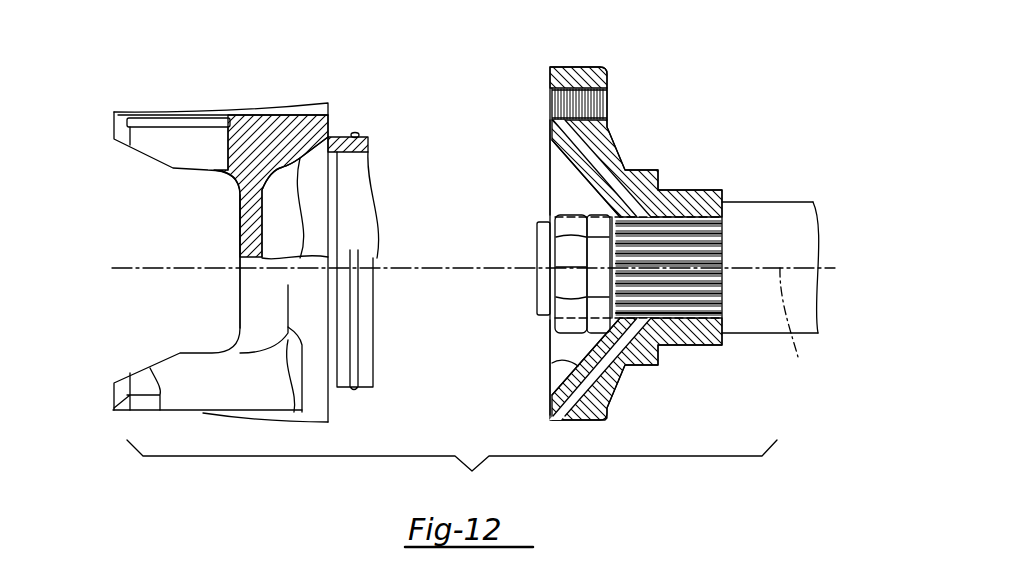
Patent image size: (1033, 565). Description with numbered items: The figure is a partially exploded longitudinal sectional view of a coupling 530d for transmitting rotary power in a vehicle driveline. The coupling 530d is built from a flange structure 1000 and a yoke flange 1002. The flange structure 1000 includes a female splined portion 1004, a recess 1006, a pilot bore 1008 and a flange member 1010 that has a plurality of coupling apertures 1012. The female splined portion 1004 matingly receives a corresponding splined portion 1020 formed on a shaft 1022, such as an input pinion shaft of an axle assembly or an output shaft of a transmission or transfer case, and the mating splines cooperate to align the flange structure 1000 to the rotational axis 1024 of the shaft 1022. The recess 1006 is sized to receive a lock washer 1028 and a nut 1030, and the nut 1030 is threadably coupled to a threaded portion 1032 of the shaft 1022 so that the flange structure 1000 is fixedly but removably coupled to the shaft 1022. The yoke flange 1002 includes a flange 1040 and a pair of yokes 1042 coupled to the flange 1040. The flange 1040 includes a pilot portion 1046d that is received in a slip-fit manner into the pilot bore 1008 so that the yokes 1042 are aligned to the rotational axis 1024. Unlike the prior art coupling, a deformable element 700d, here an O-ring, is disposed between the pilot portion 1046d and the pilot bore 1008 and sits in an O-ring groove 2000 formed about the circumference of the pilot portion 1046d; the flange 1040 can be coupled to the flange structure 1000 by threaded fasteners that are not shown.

The yoke flange 1002 is at (241, 249).
The yokes 1042 is at (114, 126).
The flange 1040 is at (240, 236).
The O-ring groove 2000 is at (368, 145).
The deformable element 700d is at (357, 133).
The pilot portion 1046d is at (355, 132).
The flange structure 1000 is at (619, 220).
The flange member 1010 is at (557, 72).
The coupling apertures 1012 is at (560, 104).
The pilot bore 1008 is at (550, 147).
The splined portion 1020 is at (697, 213).
The lock washer 1028 is at (598, 205).
The nut 1030 is at (568, 257).
The threaded portion 1032 is at (549, 307).
The recess 1006 is at (572, 364).
The female splined portion 1004 is at (686, 223).
The shaft 1022 is at (766, 305).
The rotational axis 1024 is at (797, 326).
The coupling 530d is at (452, 470).